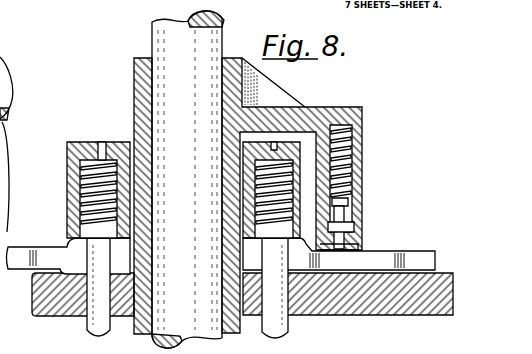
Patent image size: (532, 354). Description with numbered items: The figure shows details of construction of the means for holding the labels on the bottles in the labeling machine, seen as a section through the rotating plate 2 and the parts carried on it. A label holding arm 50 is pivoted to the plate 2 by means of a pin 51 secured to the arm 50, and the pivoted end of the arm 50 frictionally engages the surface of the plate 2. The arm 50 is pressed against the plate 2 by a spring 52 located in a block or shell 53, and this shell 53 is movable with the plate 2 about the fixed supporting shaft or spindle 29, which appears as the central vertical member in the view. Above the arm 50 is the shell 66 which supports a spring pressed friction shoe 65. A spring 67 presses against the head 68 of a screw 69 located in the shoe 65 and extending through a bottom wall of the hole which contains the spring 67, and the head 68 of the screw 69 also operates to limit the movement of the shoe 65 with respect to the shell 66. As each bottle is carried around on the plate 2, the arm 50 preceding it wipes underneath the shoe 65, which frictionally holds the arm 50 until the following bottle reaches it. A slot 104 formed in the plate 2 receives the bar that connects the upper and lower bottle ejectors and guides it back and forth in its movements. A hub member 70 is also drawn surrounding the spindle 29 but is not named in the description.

The base 2 is at (412, 313).
The shaft 29 is at (160, 14).
The plate 50 is at (383, 262).
The pin 51 is at (289, 328).
The spring 52 is at (102, 157).
The spring housing 53 is at (68, 195).
The boss 65 is at (356, 243).
The bore 66 is at (362, 168).
The spring 67 is at (362, 141).
The pin 68 is at (350, 210).
The nut 69 is at (354, 222).
The hub 70 is at (303, 107).
The member 104 is at (3, 150).